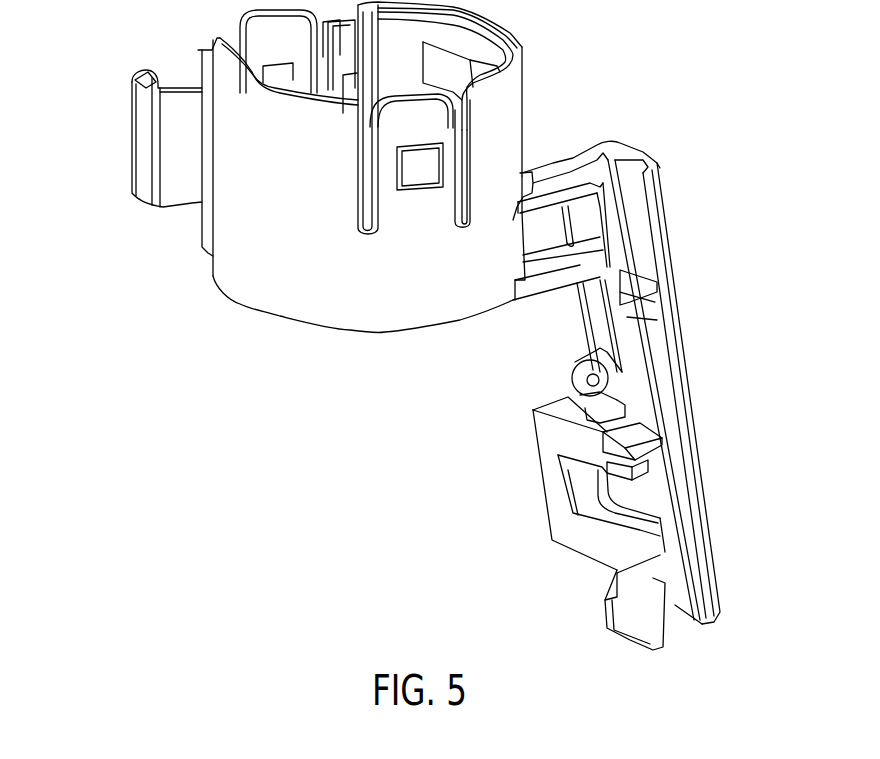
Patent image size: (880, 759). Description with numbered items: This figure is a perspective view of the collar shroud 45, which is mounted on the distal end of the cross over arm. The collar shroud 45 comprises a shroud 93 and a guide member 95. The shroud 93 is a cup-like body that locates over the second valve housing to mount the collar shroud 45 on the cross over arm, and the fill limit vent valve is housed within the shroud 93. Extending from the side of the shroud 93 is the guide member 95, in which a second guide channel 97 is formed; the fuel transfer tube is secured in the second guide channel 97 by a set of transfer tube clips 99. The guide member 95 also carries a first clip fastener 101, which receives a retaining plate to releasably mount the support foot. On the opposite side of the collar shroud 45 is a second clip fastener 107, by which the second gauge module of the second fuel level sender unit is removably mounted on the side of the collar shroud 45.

The collar shroud 45 is at (197, 427).
The shroud 93 is at (238, 272).
The guide member 95 is at (700, 190).
The second guide channel 97 is at (688, 446).
The transfer tube clips 99 is at (652, 297).
The first clip fastener 101 is at (585, 505).
The second clip fastener 107 is at (152, 112).